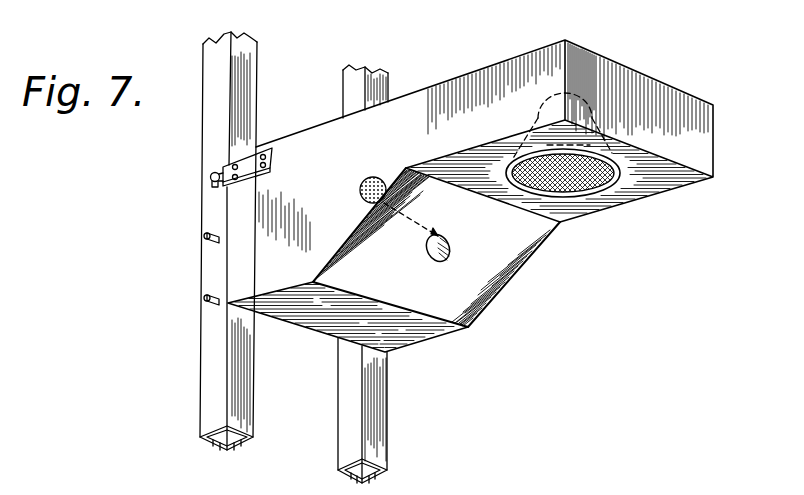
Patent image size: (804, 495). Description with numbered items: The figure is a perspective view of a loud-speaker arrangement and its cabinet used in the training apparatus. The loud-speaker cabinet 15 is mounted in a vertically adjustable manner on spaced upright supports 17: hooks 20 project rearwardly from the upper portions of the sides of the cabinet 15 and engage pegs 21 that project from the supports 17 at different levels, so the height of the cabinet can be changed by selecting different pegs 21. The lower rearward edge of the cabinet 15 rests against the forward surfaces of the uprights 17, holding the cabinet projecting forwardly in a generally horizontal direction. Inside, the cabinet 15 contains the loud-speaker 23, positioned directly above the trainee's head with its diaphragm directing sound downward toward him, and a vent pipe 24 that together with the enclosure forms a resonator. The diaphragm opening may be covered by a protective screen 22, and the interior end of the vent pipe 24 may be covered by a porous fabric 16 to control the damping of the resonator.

The loud-speaker cabinet 15 is at (490, 74).
The porous fabric 16 is at (360, 192).
The upright supports 17 is at (350, 407).
The hooks 20 is at (260, 153).
The pegs 21 is at (208, 238).
The protective screen 22 is at (587, 180).
The loud-speaker 23 is at (606, 103).
The vent pipe 24 is at (380, 218).